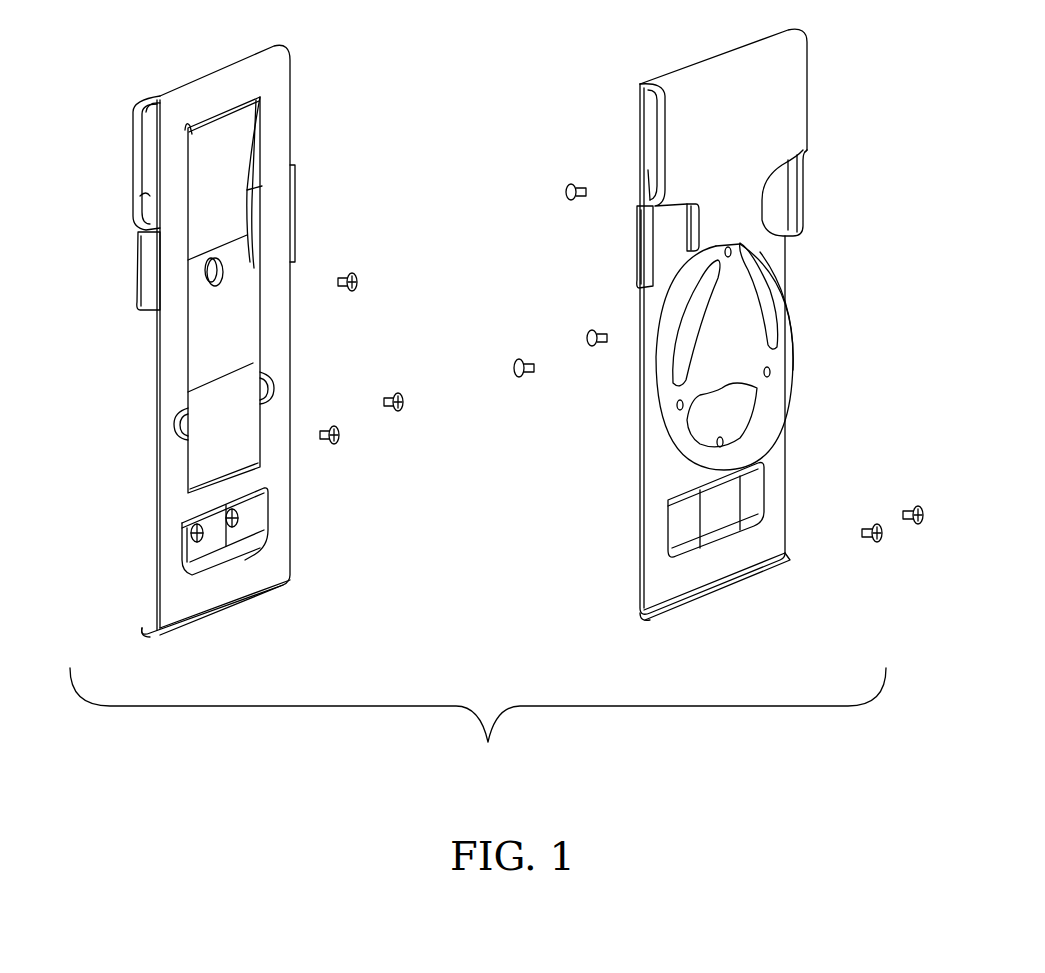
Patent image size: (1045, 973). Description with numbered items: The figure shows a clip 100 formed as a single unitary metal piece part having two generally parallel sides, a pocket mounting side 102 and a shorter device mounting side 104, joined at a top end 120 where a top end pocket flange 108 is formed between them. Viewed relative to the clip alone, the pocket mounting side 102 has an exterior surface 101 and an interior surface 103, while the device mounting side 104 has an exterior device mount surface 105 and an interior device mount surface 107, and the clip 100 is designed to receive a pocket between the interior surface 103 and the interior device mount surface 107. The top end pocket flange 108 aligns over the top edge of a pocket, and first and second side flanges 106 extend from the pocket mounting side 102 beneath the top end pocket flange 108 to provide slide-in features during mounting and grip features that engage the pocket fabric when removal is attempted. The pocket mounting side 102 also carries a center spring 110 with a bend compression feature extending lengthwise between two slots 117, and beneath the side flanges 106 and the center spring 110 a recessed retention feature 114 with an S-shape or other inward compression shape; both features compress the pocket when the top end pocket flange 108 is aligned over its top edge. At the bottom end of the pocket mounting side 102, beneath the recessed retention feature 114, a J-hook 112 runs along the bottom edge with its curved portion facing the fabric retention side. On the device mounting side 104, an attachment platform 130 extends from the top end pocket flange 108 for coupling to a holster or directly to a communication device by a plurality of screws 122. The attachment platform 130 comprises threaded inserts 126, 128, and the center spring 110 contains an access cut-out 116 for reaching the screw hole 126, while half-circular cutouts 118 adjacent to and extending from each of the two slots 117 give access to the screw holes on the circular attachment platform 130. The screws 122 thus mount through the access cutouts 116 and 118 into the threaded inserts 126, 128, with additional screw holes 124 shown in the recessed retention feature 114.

The clip 100 is at (478, 722).
The exterior surface 101 is at (168, 560).
The pocket mounting side 102 is at (312, 80).
The interior surface 103 is at (156, 503).
The device mounting side 104 is at (814, 68).
The exterior device mount surface 105 is at (782, 104).
The side flanges 106 is at (140, 264).
The interior device mount surface 107 is at (142, 200).
The top end pocket flange 108 is at (140, 170).
The center spring 110 is at (236, 332).
The J-hook 112 is at (142, 628).
The recessed retention feature 114 is at (256, 508).
The access cut-out 116 is at (216, 258).
The slots 117 is at (188, 140).
The half-circular cutouts 118 is at (176, 424).
The top end 120 is at (206, 70).
The screws 122 is at (514, 360).
The screw hole 124 is at (236, 527).
The threaded insert 126 is at (726, 246).
The threaded inserts 128 is at (675, 404).
The attachment platform 130 is at (786, 288).